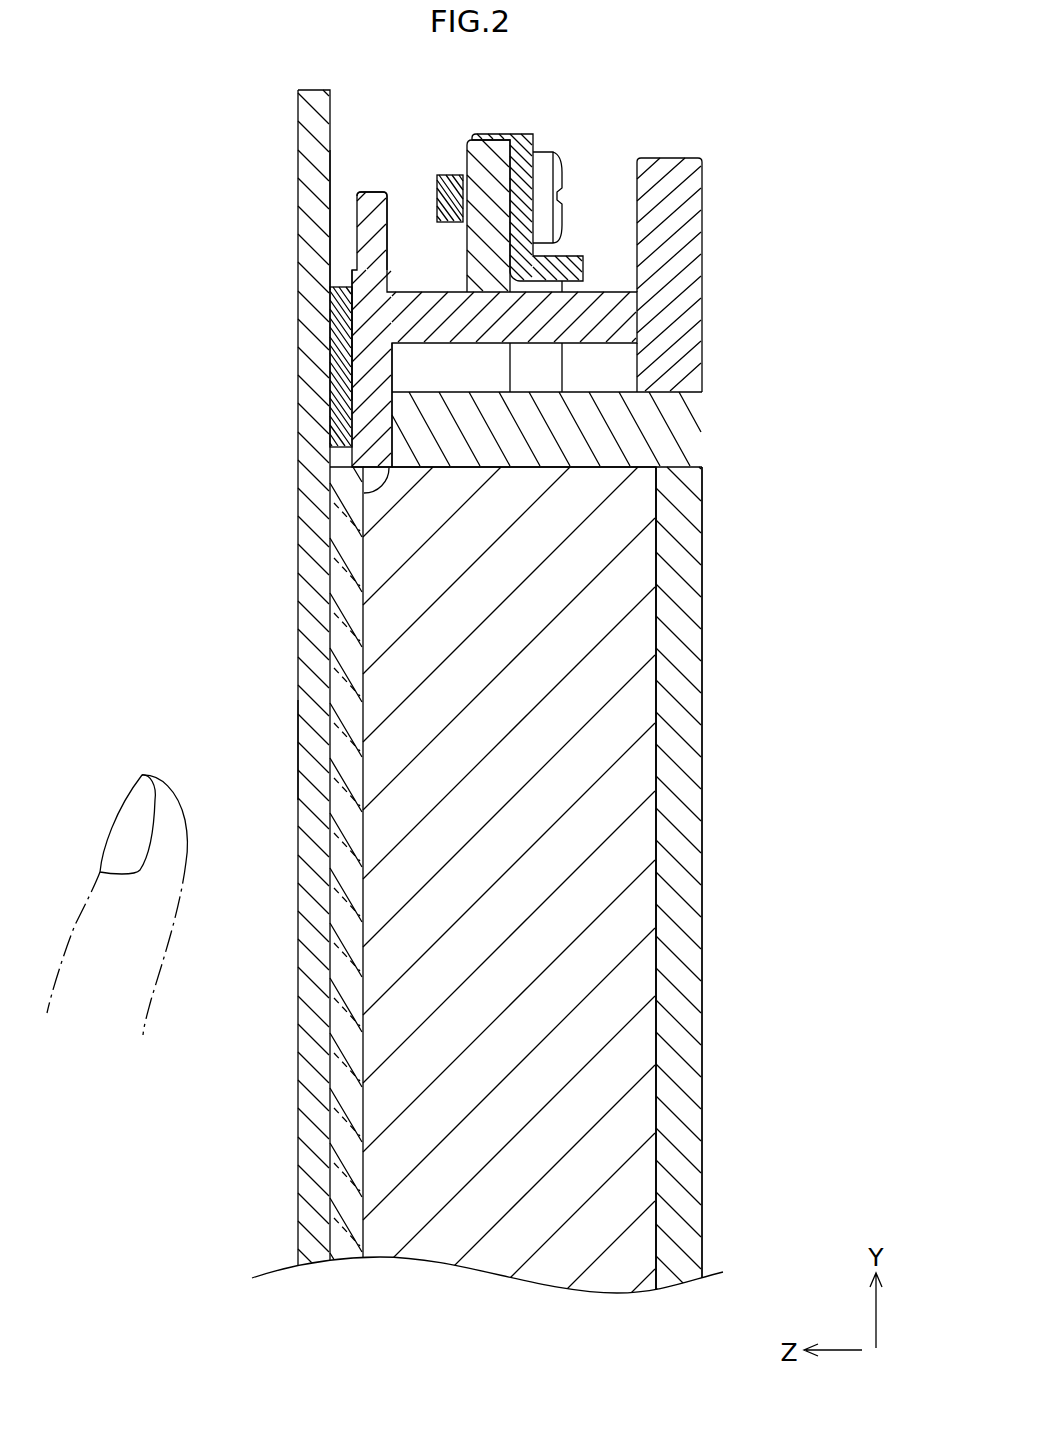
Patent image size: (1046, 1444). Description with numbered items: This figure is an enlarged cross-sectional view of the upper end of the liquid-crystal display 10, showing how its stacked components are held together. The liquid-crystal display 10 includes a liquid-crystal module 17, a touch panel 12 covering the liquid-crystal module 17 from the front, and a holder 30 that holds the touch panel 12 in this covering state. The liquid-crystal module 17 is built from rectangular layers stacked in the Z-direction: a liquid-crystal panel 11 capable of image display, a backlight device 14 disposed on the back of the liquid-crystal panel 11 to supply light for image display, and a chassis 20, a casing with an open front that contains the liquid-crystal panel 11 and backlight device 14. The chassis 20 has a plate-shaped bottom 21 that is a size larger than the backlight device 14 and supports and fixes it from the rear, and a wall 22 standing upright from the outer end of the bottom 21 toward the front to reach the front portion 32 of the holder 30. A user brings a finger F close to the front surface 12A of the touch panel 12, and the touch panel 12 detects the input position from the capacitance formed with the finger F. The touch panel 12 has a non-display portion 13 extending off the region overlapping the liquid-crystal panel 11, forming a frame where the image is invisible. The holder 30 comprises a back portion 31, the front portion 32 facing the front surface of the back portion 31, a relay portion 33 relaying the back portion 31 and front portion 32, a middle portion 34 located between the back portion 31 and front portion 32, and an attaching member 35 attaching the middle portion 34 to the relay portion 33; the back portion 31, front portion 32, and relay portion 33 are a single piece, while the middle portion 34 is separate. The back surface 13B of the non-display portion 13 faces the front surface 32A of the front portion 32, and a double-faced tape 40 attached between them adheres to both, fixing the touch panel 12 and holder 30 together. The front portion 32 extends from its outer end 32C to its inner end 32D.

The liquid-crystal display 10 is at (298, 672).
The liquid-crystal panel 11 is at (347, 1245).
The touch panel 12 is at (312, 1252).
The front surface of the touch panel 12A is at (298, 748).
The non-display portion 13 is at (317, 128).
The back surface of the non-display portion 13B is at (336, 203).
The backlight device 14 is at (518, 1252).
The liquid-crystal module 17 is at (365, 1338).
The chassis 20 is at (681, 1262).
The bottom 21 is at (680, 739).
The wall 22 is at (527, 436).
The holder 30 is at (658, 90).
The back portion 31 is at (650, 363).
The front portion 32 is at (373, 377).
The front surface of the front portion 32A is at (352, 273).
The outer end of the front portion 32C is at (373, 192).
The inner end of the front portion 32D is at (364, 486).
The relay portion 33 is at (418, 313).
The middle portion 34 is at (547, 367).
The attaching member 35 is at (543, 152).
The double-faced tape 40 is at (340, 368).
The finger F is at (113, 818).